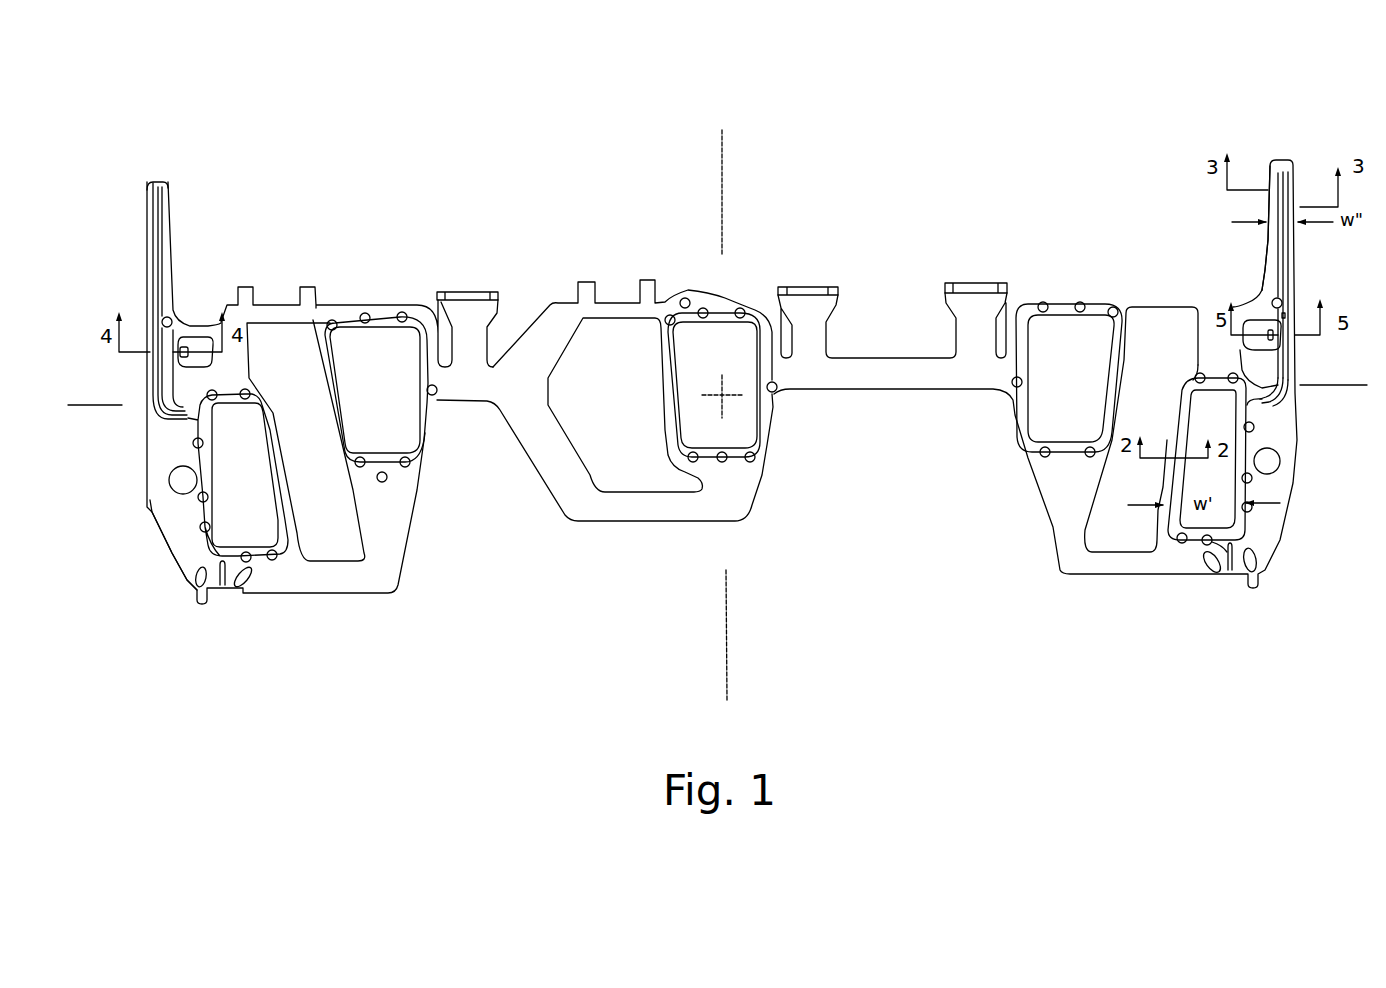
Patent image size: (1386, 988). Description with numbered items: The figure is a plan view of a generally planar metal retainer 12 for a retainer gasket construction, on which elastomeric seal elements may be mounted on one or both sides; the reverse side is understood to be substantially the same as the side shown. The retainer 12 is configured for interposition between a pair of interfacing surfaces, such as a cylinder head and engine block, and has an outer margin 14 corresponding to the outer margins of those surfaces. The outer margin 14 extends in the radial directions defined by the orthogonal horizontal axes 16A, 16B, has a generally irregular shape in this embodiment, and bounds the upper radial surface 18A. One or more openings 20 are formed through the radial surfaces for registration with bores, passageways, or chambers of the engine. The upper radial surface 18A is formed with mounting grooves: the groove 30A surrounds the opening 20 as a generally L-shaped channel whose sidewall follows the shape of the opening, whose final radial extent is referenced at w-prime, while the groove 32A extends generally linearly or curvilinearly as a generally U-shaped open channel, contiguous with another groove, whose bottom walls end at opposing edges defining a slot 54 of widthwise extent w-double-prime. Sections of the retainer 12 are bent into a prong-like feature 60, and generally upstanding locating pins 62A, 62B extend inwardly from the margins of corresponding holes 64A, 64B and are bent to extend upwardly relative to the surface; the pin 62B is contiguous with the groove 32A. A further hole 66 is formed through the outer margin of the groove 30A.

The retainer 12 is at (1083, 126).
The outer margin 14 is at (168, 560).
The horizontal axis 16A is at (97, 405).
The horizontal axis 16B is at (722, 163).
The upper radial surface 18A is at (510, 380).
The opening 20 is at (1212, 420).
The mounting groove 30A is at (1280, 470).
The mounting groove 32A is at (1278, 158).
The slot 54 is at (1297, 294).
The prong-like feature 60 is at (455, 290).
The locating pin 62A is at (222, 323).
The locating pin 62B is at (1237, 303).
The hole 64A is at (185, 412).
The hole 64B is at (1298, 393).
The hole 66 is at (1185, 368).